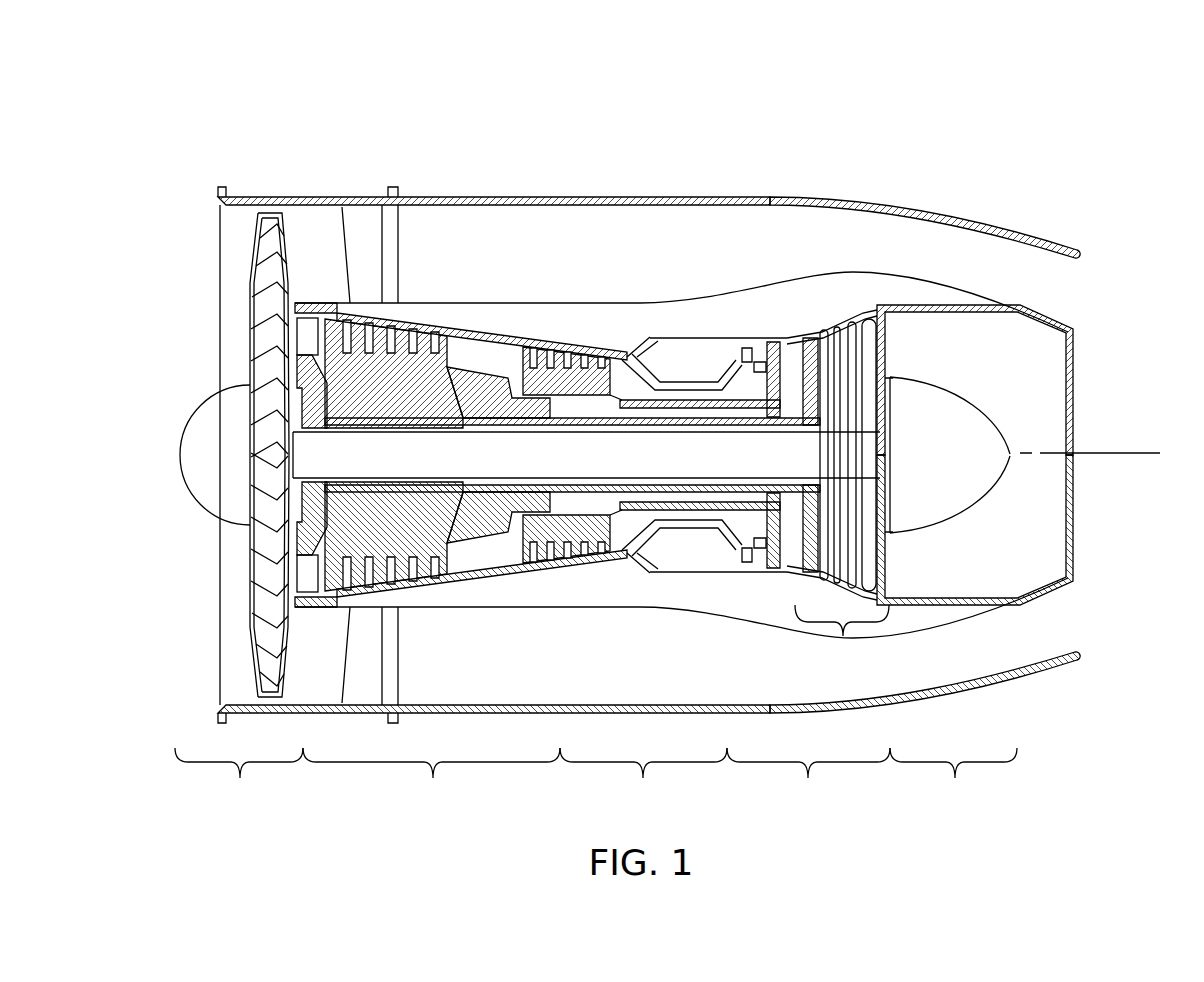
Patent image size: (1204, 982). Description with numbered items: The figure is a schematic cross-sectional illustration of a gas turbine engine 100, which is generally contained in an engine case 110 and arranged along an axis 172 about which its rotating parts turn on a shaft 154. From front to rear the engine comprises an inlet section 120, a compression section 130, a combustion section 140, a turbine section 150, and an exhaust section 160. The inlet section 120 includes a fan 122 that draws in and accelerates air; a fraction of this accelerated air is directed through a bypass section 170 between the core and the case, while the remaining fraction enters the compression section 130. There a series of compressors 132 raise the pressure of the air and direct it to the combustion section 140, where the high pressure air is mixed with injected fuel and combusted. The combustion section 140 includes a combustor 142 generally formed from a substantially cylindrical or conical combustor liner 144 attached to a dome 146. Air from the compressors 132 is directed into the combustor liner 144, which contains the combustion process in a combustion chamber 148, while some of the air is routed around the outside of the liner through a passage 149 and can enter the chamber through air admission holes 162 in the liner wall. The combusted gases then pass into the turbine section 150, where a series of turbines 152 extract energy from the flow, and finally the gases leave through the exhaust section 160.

The gas turbine engine 100 is at (874, 147).
The engine case 110 is at (437, 192).
The inlet section 120 is at (239, 781).
The fan 122 is at (262, 295).
The compression section 130 is at (431, 781).
The compressors 132 is at (400, 408).
The combustion section 140 is at (643, 781).
The combustor 142 is at (728, 336).
The combustor liner 144 is at (632, 548).
The dome 146 is at (624, 360).
The combustion chamber 148 is at (690, 555).
The passage 149 is at (696, 352).
The turbine section 150 is at (808, 781).
The turbines 152 is at (843, 636).
The shaft 154 is at (510, 432).
The exhaust section 160 is at (953, 781).
The air admission holes 162 is at (1009, 253).
The bypass section 170 is at (580, 242).
The axis 172 is at (1108, 452).